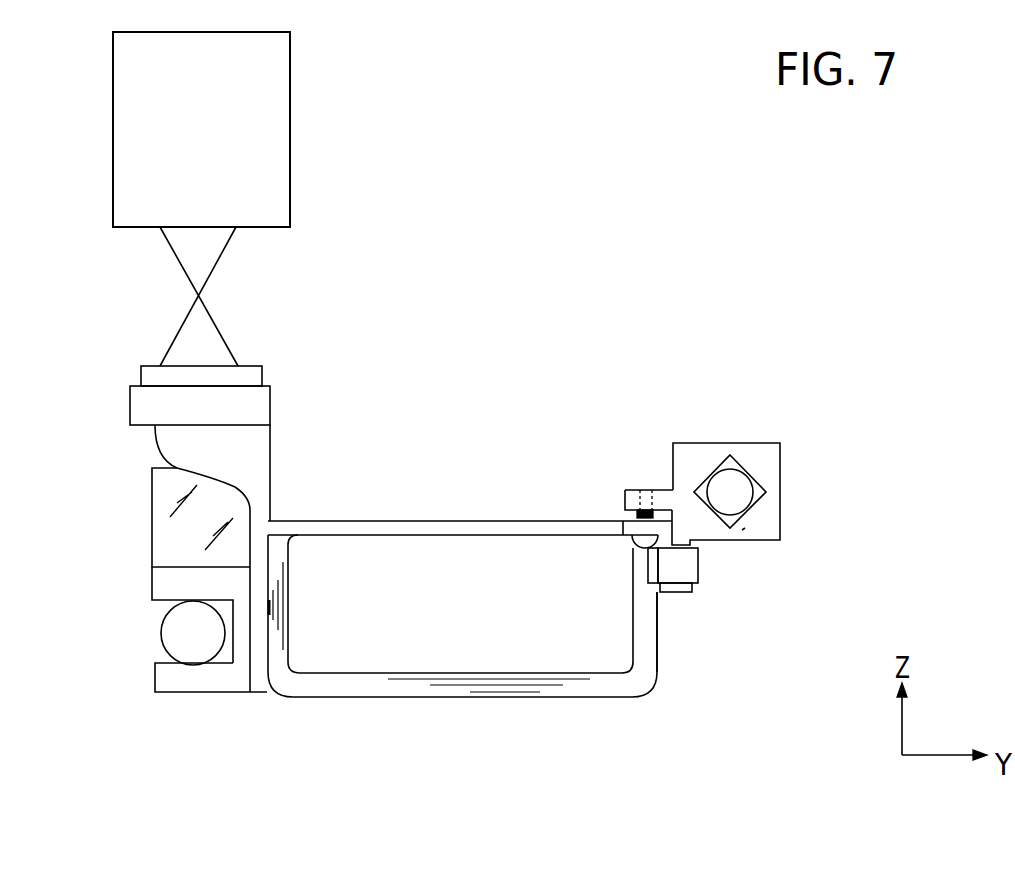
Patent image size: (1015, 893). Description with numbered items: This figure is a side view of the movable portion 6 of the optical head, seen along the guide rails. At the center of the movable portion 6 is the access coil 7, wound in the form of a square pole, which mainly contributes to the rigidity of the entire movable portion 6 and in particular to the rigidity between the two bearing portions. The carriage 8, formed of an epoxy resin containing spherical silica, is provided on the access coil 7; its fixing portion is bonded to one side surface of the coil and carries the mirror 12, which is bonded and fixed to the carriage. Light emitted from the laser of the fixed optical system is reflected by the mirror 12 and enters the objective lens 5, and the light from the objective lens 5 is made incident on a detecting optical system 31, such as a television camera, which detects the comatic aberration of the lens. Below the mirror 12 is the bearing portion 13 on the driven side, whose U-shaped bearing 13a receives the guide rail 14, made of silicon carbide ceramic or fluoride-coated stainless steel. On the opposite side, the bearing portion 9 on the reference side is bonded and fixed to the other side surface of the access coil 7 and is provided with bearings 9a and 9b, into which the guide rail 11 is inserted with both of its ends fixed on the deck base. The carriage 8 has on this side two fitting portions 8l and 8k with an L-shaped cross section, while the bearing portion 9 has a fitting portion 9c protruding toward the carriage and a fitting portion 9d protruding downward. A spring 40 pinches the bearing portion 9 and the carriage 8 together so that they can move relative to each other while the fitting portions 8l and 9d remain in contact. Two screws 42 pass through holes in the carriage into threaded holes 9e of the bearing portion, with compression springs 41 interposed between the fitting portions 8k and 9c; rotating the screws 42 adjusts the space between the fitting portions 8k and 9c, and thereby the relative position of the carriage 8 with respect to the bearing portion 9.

The detecting optical system 31 is at (273, 88).
The objective lens 5 is at (210, 360).
The guide rail 14 is at (258, 405).
The mirror 12 is at (163, 496).
The U-shaped bearing 13a is at (160, 599).
The bearing portion on a driven side 13 is at (213, 687).
The carriage 8 is at (286, 522).
The access coil 7 is at (470, 690).
The movable portion 6 is at (398, 748).
The fitting portion 8k is at (637, 516).
The fitting portion 8l is at (665, 592).
The screw 42 is at (630, 546).
The compression spring 41 is at (636, 519).
The threaded hole 9e is at (643, 490).
The fitting portion 9c is at (664, 490).
The bearing portion on a reference side 9 is at (760, 443).
The bearing 9b is at (812, 491).
The bearing 9a is at (763, 490).
The guide rail 11 is at (742, 530).
The fitting portion 9d is at (683, 592).
The spring 40 is at (702, 567).